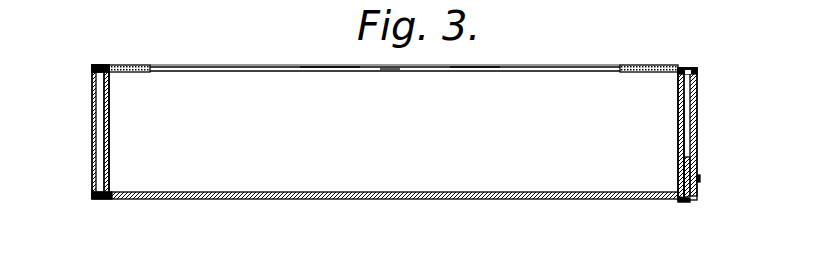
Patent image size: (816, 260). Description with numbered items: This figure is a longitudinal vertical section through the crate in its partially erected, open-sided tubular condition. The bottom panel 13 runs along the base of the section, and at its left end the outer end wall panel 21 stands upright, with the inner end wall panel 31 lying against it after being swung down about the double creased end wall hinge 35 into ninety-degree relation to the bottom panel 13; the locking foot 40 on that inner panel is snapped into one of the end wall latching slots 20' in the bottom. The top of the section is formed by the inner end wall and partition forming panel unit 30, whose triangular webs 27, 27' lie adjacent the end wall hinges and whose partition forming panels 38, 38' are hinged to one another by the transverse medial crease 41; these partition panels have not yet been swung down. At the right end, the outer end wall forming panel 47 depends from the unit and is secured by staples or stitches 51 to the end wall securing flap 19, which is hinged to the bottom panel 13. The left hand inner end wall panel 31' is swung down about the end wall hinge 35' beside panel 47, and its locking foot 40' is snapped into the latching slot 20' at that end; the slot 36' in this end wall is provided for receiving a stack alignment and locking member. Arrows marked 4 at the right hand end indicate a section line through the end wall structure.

The bottom panel 13 is at (480, 200).
The end wall securing flap 19 is at (680, 165).
The end wall latching slots 20' is at (73, 209).
The outer end wall panel 21 is at (92, 137).
The triangular webs 27 is at (356, 53).
The triangular webs 27' is at (635, 55).
The inner end wall and partition forming panel unit 30 is at (267, 64).
The inner end wall panel 31 is at (129, 131).
The left hand inner end wall panel 31' is at (651, 134).
The double creased end wall hinge 35 is at (96, 52).
The end wall hinge 35' is at (716, 63).
The transversely elongated slot 36' is at (702, 47).
The partition forming panel 38 is at (330, 55).
The partition forming panel 38' is at (475, 55).
The locking foot 40 is at (106, 212).
The locking foot 40' is at (712, 208).
The transverse medial crease 41 is at (394, 69).
The outer end wall forming panel 47 is at (697, 103).
The staples or stitches 51 is at (698, 180).
The section line 4- 4 is at (684, 53).